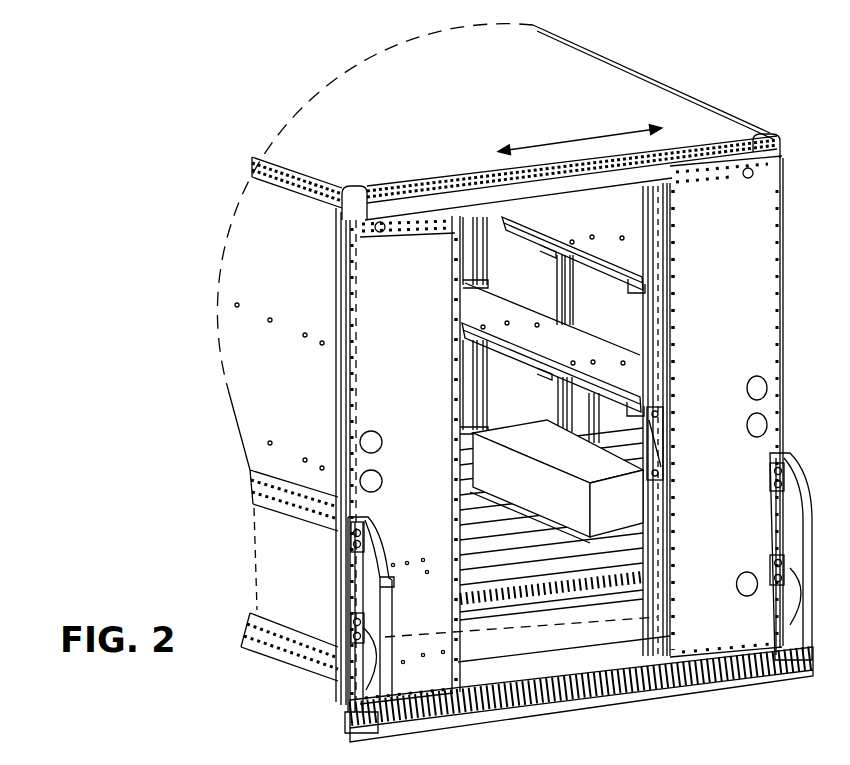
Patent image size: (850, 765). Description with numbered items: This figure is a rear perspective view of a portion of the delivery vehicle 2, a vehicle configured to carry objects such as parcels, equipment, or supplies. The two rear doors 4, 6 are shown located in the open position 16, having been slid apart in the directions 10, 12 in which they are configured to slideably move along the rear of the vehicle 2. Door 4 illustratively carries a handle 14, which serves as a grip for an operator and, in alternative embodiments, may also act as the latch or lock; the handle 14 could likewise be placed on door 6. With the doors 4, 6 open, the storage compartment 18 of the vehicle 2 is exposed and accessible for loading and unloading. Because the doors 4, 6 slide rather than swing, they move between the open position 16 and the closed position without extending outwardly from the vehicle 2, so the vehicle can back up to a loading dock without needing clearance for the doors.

The delivery vehicle 2 is at (671, 50).
The door 4 is at (657, 307).
The door 6 is at (385, 348).
The direction 10 is at (616, 134).
The direction 12 is at (541, 144).
The handle 14 is at (670, 430).
The open position 16 is at (506, 262).
The storage compartment 18 is at (500, 405).